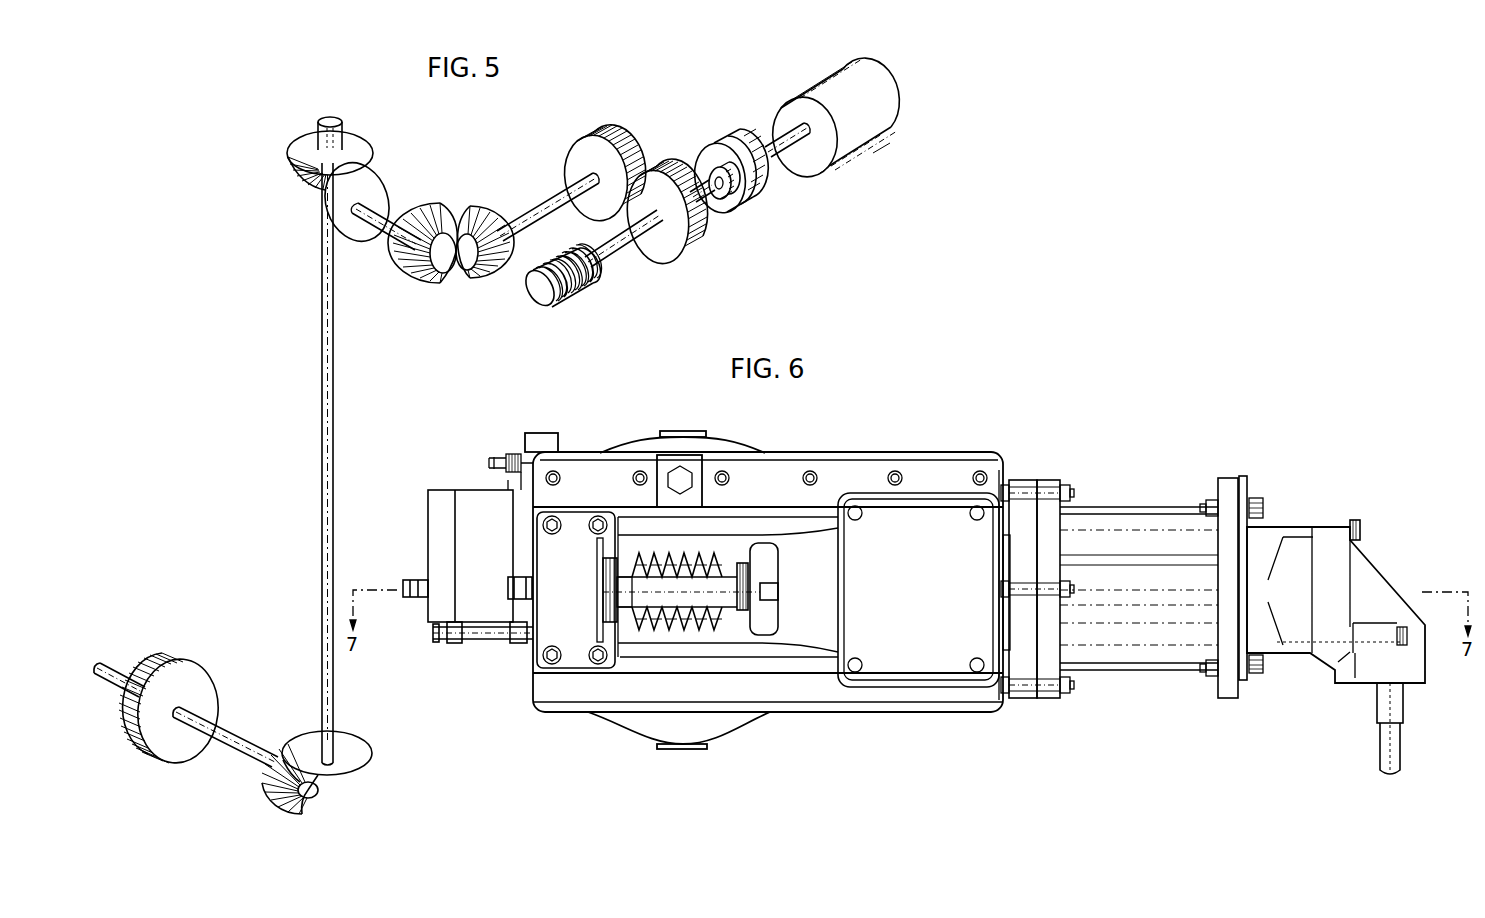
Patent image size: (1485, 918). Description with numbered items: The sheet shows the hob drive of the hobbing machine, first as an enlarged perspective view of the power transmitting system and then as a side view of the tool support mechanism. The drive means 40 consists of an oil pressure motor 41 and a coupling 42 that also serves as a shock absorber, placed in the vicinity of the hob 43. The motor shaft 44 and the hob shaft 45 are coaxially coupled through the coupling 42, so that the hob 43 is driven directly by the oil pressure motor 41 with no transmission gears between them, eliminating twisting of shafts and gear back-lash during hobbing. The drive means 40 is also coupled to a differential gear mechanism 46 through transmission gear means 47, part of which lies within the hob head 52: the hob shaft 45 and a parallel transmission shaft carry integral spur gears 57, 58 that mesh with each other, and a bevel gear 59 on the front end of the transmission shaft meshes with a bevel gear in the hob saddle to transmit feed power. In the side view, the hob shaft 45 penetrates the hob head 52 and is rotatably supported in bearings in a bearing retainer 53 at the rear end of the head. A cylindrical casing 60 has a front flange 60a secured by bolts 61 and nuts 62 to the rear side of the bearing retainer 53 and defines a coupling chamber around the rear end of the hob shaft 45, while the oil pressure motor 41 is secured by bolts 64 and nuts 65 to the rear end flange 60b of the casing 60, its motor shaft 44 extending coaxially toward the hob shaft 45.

In FIG. 6, the drive means 40 is at (1306, 512).
In FIG. 5, the oil pressure motor 41 is at (868, 150).
In FIG. 6, the oil pressure motor 41 is at (1338, 527).
In FIG. 5, the coupling 42 is at (768, 198).
In FIG. 6, the coupling 42 is at (1150, 495).
In FIG. 5, the hob 43 is at (575, 288).
In FIG. 6, the hob 43 is at (600, 582).
In FIG. 5, the motor shaft 44 is at (772, 148).
In FIG. 5, the hob shaft 45 is at (631, 246).
In FIG. 6, the hob shaft 45 is at (733, 582).
In FIG. 5, the differential gear mechanism 46 is at (207, 675).
In FIG. 5, the transmission gear means 47 is at (380, 185).
In FIG. 6, the hob head 52 is at (856, 438).
In FIG. 6, the bearing retainer 53 is at (1020, 700).
In FIG. 5, the spur gear 57 is at (687, 252).
In FIG. 5, the spur gear 58 is at (572, 158).
In FIG. 5, the bevel gear 59 is at (478, 218).
In FIG. 6, the cylindrical casing 60 is at (1142, 661).
In FIG. 6, the flange 60a is at (1048, 700).
In FIG. 6, the rear end flange 60b is at (1228, 700).
In FIG. 6, the bolts 61 is at (1009, 484).
In FIG. 6, the nuts 62 is at (1066, 485).
In FIG. 6, the bolts 64 is at (1255, 497).
In FIG. 6, the nuts 65 is at (1212, 498).